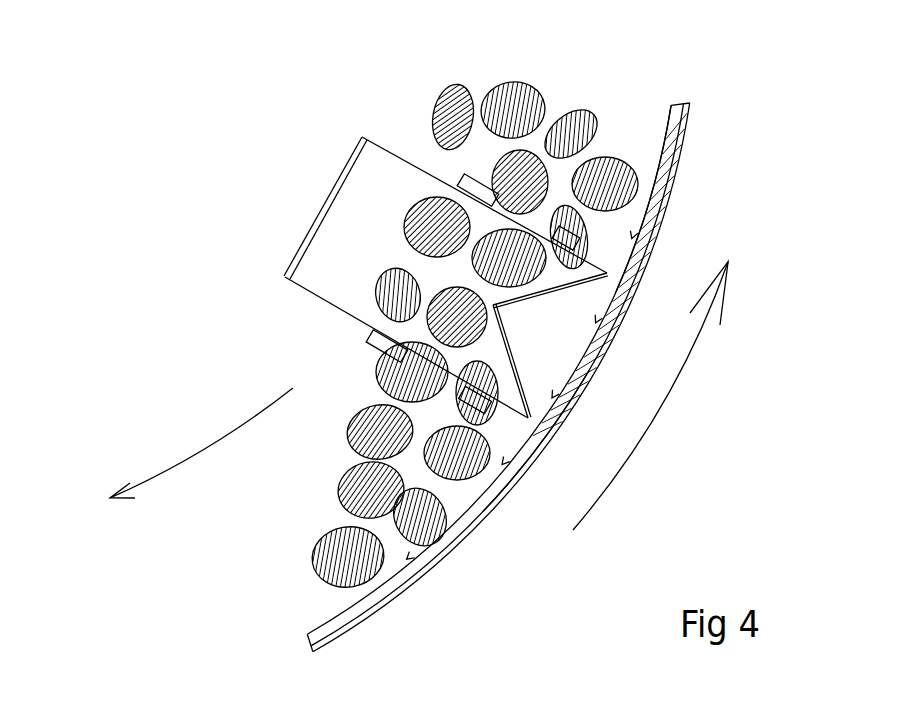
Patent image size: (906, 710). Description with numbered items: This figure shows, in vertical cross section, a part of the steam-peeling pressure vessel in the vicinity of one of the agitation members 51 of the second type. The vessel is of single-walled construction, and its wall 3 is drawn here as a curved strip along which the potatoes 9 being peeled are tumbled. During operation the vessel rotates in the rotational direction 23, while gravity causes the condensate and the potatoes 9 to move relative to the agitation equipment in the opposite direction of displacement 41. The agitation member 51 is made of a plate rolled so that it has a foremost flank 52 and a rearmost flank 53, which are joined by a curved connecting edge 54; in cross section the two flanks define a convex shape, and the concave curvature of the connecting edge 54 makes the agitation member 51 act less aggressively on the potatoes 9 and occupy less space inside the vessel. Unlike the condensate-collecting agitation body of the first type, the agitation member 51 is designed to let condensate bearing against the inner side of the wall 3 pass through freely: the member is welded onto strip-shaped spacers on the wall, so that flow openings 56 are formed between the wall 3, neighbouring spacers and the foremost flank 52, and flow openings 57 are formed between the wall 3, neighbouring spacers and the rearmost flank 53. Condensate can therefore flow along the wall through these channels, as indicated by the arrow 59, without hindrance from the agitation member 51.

The wall 3 is at (440, 553).
The potatoes 9 is at (456, 100).
The rotational direction 23 is at (663, 403).
The direction of displacement 41 is at (205, 455).
The agitation member 51 is at (340, 223).
The foremost flank 52 is at (414, 223).
The rearmost flank 53 is at (320, 278).
The connecting edge 54 is at (343, 218).
The flow openings 56 is at (613, 280).
The flow openings 57 is at (532, 423).
The arrow 59 is at (577, 353).